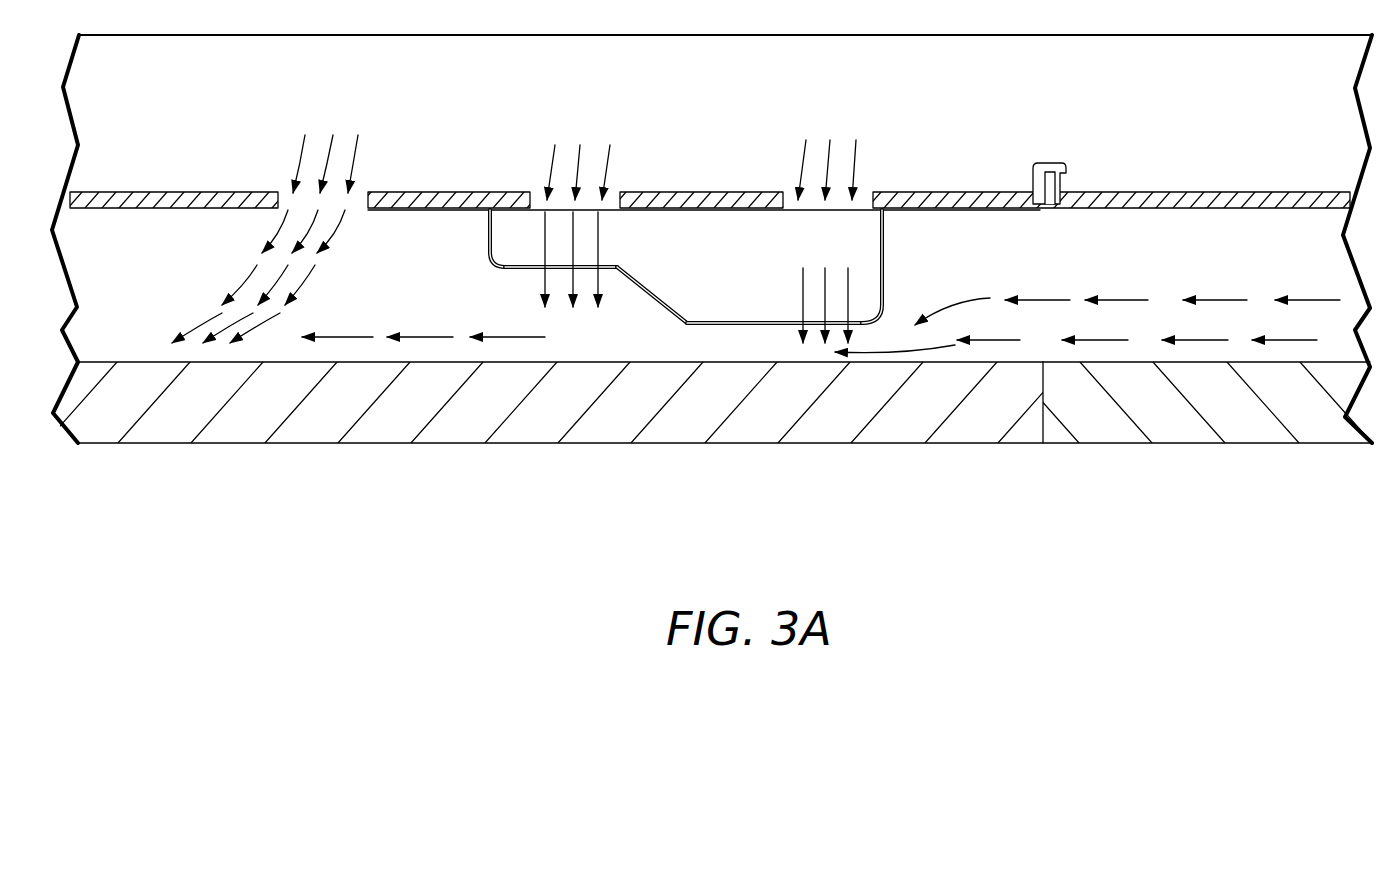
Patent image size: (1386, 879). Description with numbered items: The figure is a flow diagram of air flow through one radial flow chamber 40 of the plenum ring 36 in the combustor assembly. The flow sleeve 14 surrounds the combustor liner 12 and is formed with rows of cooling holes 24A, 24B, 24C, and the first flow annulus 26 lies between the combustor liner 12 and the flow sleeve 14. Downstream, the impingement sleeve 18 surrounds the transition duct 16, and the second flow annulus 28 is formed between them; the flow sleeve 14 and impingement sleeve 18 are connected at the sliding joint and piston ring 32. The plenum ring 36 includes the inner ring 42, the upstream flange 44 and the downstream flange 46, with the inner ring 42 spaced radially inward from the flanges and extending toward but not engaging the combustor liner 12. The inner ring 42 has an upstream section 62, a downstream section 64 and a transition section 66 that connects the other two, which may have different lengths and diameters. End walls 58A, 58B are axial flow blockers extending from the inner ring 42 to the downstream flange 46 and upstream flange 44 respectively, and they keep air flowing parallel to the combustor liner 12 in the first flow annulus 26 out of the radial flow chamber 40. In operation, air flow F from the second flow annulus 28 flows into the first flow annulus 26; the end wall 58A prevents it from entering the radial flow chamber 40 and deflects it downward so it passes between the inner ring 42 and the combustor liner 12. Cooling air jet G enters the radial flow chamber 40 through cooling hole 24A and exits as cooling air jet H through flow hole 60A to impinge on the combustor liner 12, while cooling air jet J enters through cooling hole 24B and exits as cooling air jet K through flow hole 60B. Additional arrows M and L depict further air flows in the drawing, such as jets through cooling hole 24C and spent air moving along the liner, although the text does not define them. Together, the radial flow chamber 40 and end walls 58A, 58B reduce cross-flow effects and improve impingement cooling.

The combustor liner 12 is at (318, 448).
The flow sleeve 14 is at (445, 187).
The transition duct 16 is at (1262, 448).
The impingement sleeve 18 is at (1178, 192).
The cooling hole 24A is at (867, 195).
The cooling hole 24B is at (617, 188).
The cooling hole 24C is at (293, 193).
The first flow annulus 26 is at (127, 285).
The second flow annulus 28 is at (1115, 323).
The sliding joint and piston ring 32 is at (1068, 165).
The plenum ring 36 is at (750, 323).
The radial flow chamber 40 is at (495, 262).
The inner ring 42 is at (670, 332).
The upstream flange 44 is at (890, 213).
The downstream flange 46 is at (485, 212).
The end wall 58A is at (885, 247).
The end wall 58B is at (502, 235).
The flow hole 60A is at (793, 313).
The flow hole 60B is at (613, 258).
The upstream section 62 is at (862, 322).
The downstream section 64 is at (518, 268).
The transition section 66 is at (650, 295).
The airflow M is at (333, 147).
The cooling air jet J is at (587, 153).
The cooling air jet G is at (835, 148).
The cooling air jet K is at (598, 235).
The cooling air jet H is at (847, 287).
The airflow L is at (413, 337).
The air flow F is at (1145, 298).